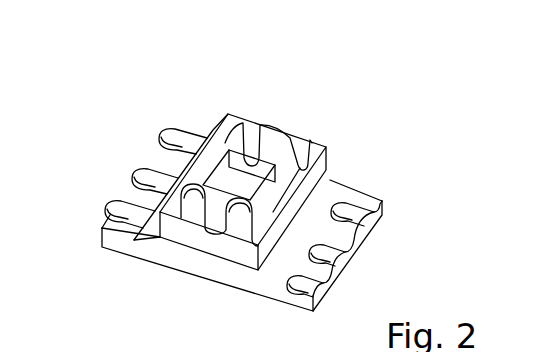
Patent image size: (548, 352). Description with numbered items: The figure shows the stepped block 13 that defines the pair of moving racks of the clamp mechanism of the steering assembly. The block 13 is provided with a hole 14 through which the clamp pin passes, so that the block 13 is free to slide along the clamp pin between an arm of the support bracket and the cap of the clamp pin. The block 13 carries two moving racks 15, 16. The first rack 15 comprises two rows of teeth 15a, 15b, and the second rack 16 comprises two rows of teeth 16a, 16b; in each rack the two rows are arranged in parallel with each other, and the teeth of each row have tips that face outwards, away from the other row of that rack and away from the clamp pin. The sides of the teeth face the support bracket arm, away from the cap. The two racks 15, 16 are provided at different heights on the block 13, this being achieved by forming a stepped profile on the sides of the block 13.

The block 13 is at (367, 168).
The hole 14 is at (232, 148).
The moving rack 15 is at (284, 180).
The row of teeth 15a is at (211, 229).
The row of teeth 15b is at (307, 128).
The moving rack 16 is at (141, 212).
The row of teeth 16a is at (131, 182).
The row of teeth 16b is at (356, 244).